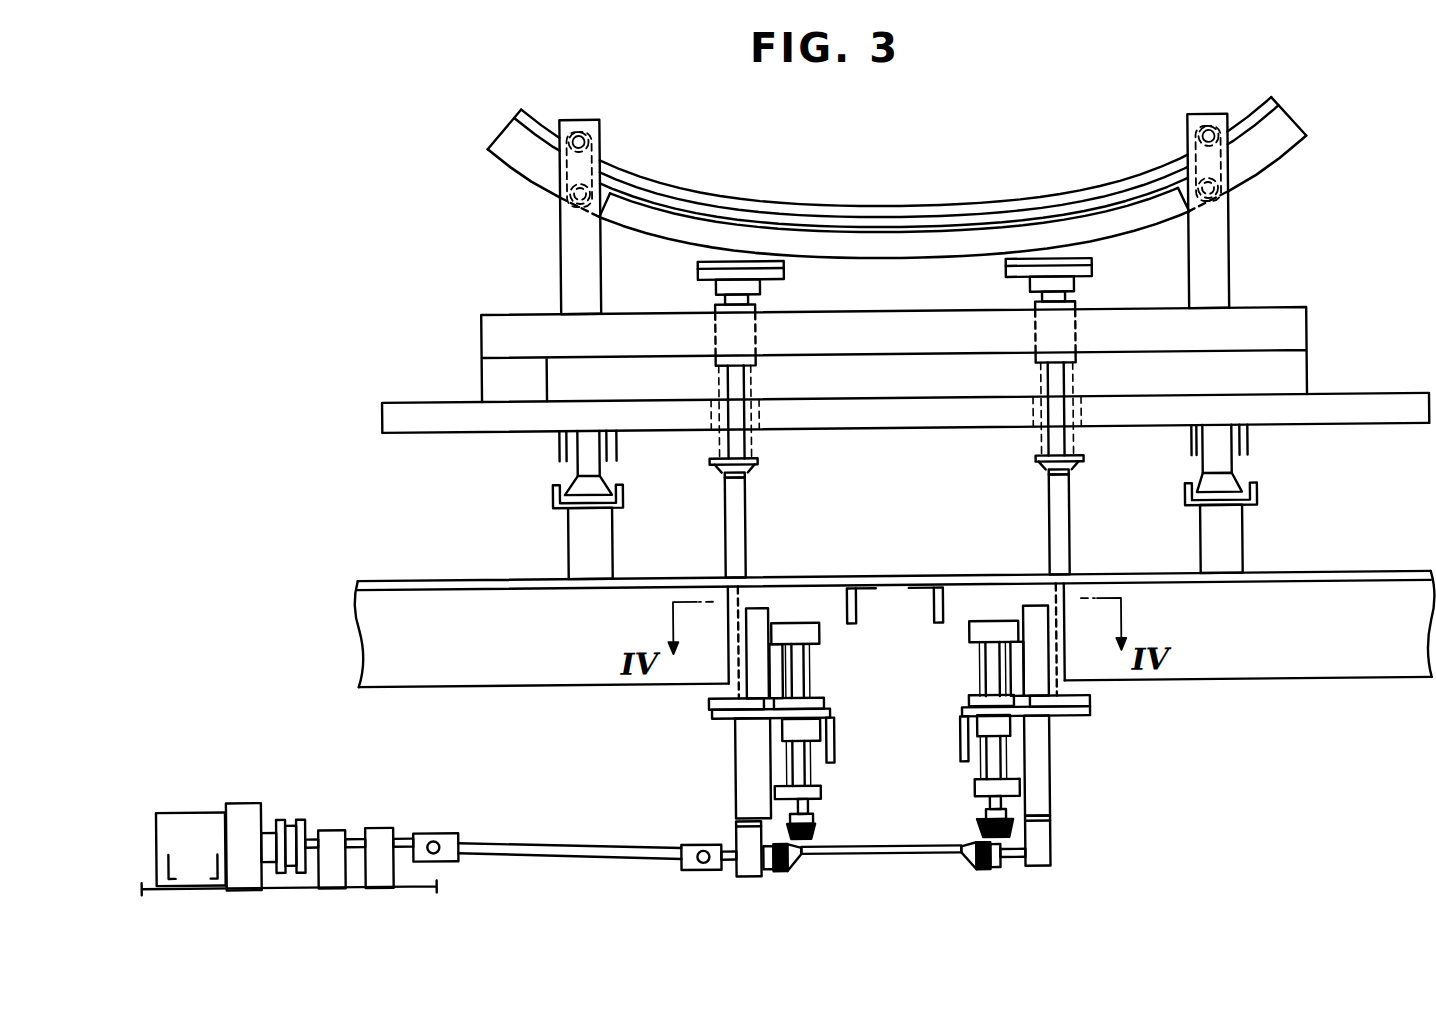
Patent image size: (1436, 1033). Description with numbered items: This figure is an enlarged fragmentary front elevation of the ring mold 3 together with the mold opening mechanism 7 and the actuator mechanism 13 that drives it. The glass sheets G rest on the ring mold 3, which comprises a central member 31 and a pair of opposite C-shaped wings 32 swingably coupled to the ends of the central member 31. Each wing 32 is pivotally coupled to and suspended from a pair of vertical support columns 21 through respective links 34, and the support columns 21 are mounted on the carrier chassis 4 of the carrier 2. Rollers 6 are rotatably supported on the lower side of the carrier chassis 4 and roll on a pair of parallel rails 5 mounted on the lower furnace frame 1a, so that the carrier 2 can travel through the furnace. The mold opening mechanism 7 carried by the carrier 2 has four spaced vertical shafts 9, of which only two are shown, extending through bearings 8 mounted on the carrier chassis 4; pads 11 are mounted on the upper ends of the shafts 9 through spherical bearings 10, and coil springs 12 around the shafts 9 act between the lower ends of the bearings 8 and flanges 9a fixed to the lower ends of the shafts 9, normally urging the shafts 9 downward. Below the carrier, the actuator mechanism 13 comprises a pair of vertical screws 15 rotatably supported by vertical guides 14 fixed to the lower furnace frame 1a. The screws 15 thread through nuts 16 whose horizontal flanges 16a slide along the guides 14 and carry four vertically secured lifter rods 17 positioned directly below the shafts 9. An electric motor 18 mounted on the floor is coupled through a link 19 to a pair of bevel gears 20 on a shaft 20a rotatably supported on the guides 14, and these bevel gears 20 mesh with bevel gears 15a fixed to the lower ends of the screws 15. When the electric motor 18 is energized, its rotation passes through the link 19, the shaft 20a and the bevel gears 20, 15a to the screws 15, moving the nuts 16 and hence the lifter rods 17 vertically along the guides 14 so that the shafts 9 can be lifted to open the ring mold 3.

The lower furnace frame 1a is at (1310, 665).
The carrier 2 is at (1369, 340).
The ring mold 3 is at (893, 189).
The glass sheets G is at (905, 215).
The central member 31 is at (950, 236).
The C-shaped wings 32 is at (510, 140).
The links 34 is at (600, 150).
The vertical support columns 21 is at (577, 262).
The pads 11 is at (750, 262).
The spherical bearings 10 is at (760, 289).
The bearings 8 is at (727, 330).
The vertical shafts 9 is at (901, 435).
The flanges 9a is at (758, 466).
The coil springs 12 is at (760, 440).
The mold opening mechanism 7 is at (766, 382).
The carrier chassis 4 is at (1385, 400).
The rails 5 is at (590, 492).
The rollers 6 is at (560, 451).
The lifter rods 17 is at (742, 546).
The actuator mechanism 13 is at (715, 790).
The vertical guides 14 is at (742, 745).
The vertical screws 15 is at (800, 672).
The bevel gears 15a is at (810, 830).
The nuts 16 is at (803, 728).
The horizontal flanges 16a is at (708, 703).
The electric motor 18 is at (205, 822).
The link 19 is at (597, 855).
The bevel gears 20 is at (790, 860).
The shaft 20a is at (895, 855).